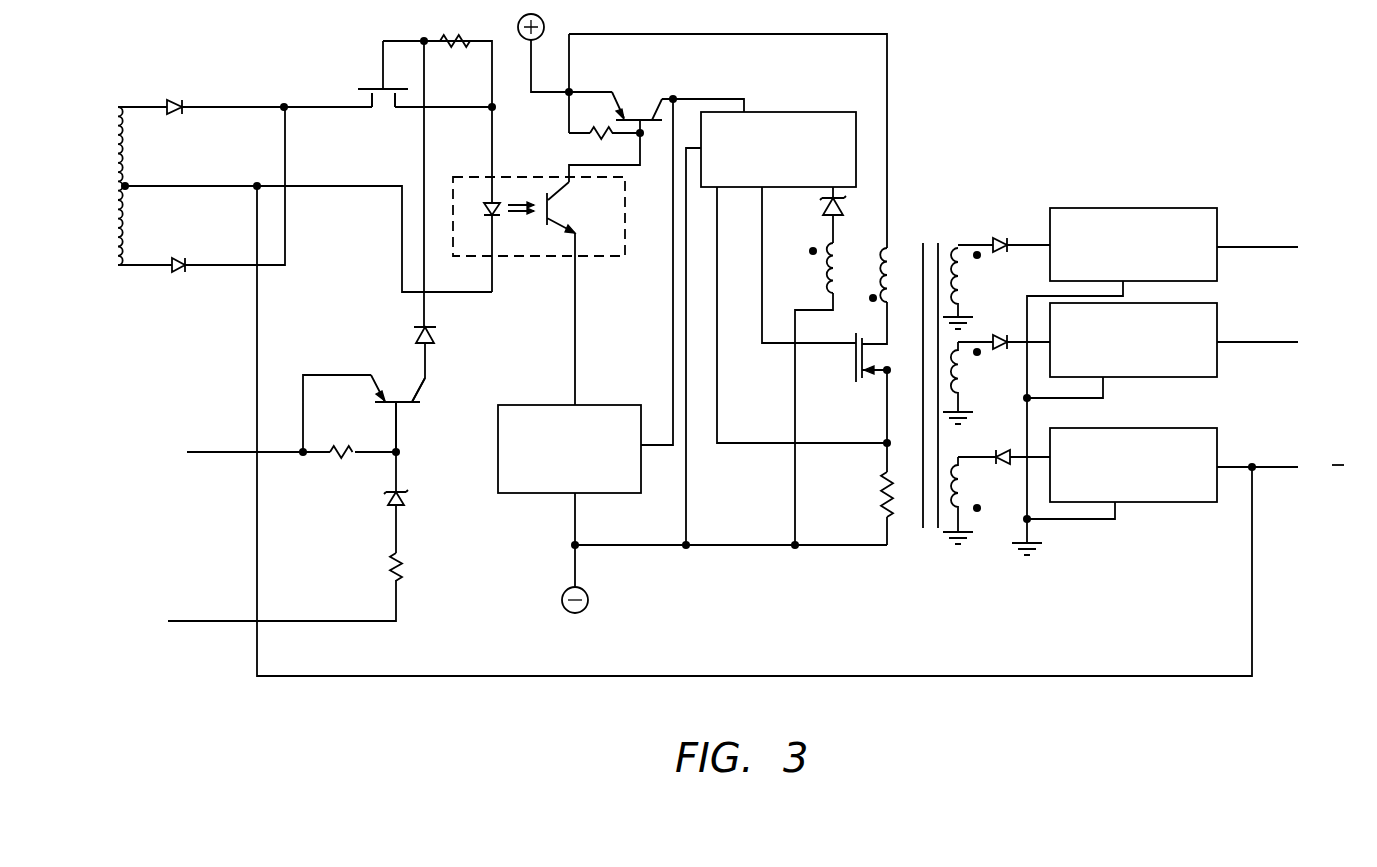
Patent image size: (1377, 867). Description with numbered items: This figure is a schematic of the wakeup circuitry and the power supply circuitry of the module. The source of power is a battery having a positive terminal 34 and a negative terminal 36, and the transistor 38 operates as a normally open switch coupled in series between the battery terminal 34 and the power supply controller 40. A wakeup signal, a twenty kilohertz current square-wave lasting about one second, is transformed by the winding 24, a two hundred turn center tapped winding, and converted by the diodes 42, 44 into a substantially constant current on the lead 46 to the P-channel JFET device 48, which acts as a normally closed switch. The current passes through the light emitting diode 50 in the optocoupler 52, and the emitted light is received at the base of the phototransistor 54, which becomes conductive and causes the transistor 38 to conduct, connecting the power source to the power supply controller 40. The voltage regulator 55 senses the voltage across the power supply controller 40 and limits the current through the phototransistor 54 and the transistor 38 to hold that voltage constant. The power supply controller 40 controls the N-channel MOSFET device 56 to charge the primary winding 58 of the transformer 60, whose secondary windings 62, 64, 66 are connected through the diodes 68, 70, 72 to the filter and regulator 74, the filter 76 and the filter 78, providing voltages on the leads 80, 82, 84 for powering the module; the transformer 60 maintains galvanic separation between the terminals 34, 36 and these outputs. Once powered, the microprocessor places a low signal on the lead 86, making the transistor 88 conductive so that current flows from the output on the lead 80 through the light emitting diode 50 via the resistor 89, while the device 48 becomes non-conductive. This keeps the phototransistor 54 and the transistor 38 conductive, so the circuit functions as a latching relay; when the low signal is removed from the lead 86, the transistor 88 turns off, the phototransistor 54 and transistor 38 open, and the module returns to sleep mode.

The winding 24 is at (116, 243).
The positive terminal 34 is at (518, 24).
The negative terminal 36 is at (588, 606).
The transistor 38 is at (628, 100).
The power supply controller 40 is at (823, 112).
The diode 42 is at (172, 98).
The diode 44 is at (178, 256).
The lead 46 is at (295, 105).
The P-channel JFET device 48 is at (388, 100).
The light emitting diode 50 is at (485, 211).
The optocoupler 52 is at (551, 172).
The phototransistor 54 is at (555, 212).
The voltage regulator 55 is at (532, 405).
The N-channel MOSFET device 56 is at (852, 362).
The primary winding 58 is at (900, 247).
The transformer 60 is at (931, 240).
The secondary winding 62 is at (980, 258).
The secondary winding 64 is at (980, 355).
The secondary winding 66 is at (978, 505).
The diode 68 is at (995, 240).
The diode 70 is at (994, 338).
The diode 72 is at (1003, 450).
The filter and regulator 74 is at (1183, 215).
The filter 76 is at (1212, 310).
The filter 78 is at (1185, 435).
The lead 80 is at (1234, 247).
The lead 82 is at (1234, 342).
The lead 84 is at (1238, 466).
The lead 86 is at (232, 621).
The transistor 88 is at (398, 392).
The resistor 89 is at (455, 36).